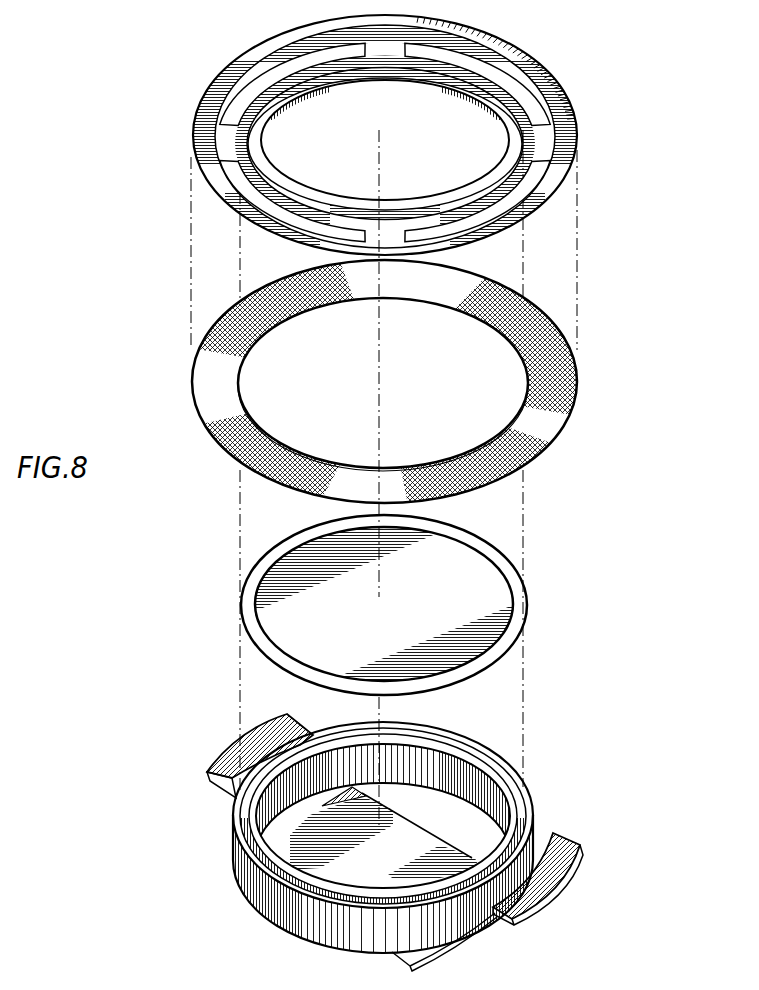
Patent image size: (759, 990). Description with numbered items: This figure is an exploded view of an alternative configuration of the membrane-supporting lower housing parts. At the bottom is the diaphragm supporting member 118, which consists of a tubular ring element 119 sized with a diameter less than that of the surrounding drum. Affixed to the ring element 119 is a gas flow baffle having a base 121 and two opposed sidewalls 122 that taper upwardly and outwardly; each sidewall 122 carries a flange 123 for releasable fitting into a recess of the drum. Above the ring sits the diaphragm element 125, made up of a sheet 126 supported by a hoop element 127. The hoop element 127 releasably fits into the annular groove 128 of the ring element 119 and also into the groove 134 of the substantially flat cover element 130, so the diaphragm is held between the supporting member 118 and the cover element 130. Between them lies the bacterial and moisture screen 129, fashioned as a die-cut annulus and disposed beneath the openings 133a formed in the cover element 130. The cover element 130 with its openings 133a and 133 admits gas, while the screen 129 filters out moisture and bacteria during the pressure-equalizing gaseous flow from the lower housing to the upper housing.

The diaphragm supporting member 118 is at (540, 796).
The tubular ring element 119 is at (447, 762).
The base 121 is at (357, 860).
The sidewalls 122 is at (362, 791).
The flange 123 is at (227, 755).
The diaphragm element 125 is at (533, 561).
The sheet 126 is at (412, 597).
The hoop element 127 is at (520, 607).
The annular groove 128 is at (253, 835).
The bacterial and moisture screen 129 is at (577, 385).
The cover element 130 is at (590, 154).
The spring fingers 133 is at (572, 140).
The openings 133a is at (525, 95).
The groove 134 is at (490, 192).